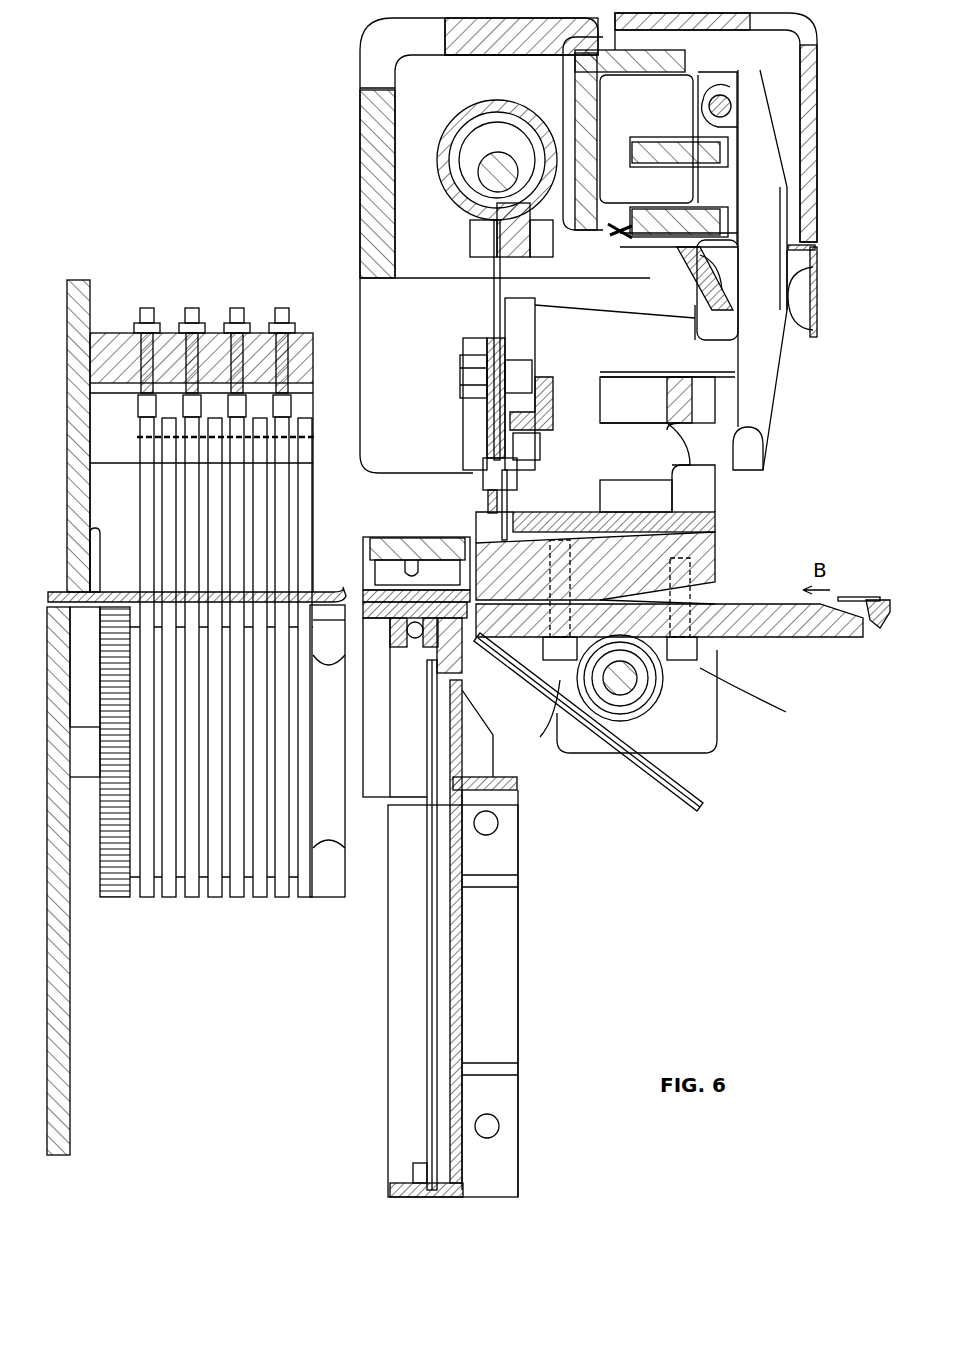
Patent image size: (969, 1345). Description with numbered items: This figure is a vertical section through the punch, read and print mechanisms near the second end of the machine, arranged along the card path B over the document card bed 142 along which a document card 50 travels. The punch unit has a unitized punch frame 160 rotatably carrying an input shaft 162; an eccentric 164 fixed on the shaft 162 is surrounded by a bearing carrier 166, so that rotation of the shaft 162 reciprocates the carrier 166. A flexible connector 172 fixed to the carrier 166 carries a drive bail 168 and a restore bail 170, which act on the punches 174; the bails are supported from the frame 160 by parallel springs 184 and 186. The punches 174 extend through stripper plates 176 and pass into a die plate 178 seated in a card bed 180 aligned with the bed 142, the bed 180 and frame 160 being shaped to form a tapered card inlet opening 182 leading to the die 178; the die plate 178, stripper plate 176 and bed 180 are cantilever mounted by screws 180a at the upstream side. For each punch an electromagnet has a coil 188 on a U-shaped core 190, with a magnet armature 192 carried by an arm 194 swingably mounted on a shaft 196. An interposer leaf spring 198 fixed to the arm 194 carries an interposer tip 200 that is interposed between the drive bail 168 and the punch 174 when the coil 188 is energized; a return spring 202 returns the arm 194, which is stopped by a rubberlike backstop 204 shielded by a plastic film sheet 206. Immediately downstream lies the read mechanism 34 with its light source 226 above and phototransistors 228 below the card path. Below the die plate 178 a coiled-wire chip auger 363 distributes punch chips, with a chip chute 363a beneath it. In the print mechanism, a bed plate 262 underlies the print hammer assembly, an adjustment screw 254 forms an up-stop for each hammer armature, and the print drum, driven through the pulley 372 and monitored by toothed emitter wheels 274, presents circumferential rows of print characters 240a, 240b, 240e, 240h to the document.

The read mechanism 34 is at (390, 520).
The document card 50 is at (859, 598).
The document card bed 142 is at (881, 628).
The punch frame 160 is at (707, 549).
The input shaft 162 is at (478, 172).
The eccentric 164 is at (503, 142).
The bearing carrier 166 is at (450, 123).
The drive bail 168 is at (506, 350).
The restore bail 170 is at (487, 408).
The flexible connector 172 is at (492, 292).
The punches 174 is at (476, 510).
The stripper plates 176 is at (530, 546).
The die plate 178 is at (593, 605).
The card bed 180 is at (778, 638).
The screws 180a is at (673, 701).
The tapered card inlet opening 182 is at (702, 585).
The parallel spring 184 is at (621, 320).
The parallel spring 186 is at (700, 498).
The coil 188 is at (640, 163).
The U-shaped core 190 is at (672, 107).
The magnet armature 192 is at (715, 180).
The arm 194 is at (770, 415).
The shaft 196 is at (732, 106).
The interposer leaf spring 198 is at (625, 443).
The interposer tip 200 is at (535, 462).
The return spring 202 is at (715, 359).
The backstop 204 is at (797, 322).
The plastic film sheet 206 is at (790, 330).
The light source 226 is at (380, 560).
The phototransistor 228 is at (425, 630).
The circumferential row of print characters 240a is at (307, 900).
The circumferential row of print characters 240b is at (280, 900).
The circumferential row of print characters 240e is at (213, 900).
The circumferential row of print characters 240h is at (150, 900).
The adjustment screw 254 is at (147, 307).
The bed plate 262 is at (75, 618).
The emitter wheels 274 is at (113, 905).
The chip auger 363 is at (668, 700).
The chip chute 363a is at (637, 780).
The pulley 372 is at (345, 855).